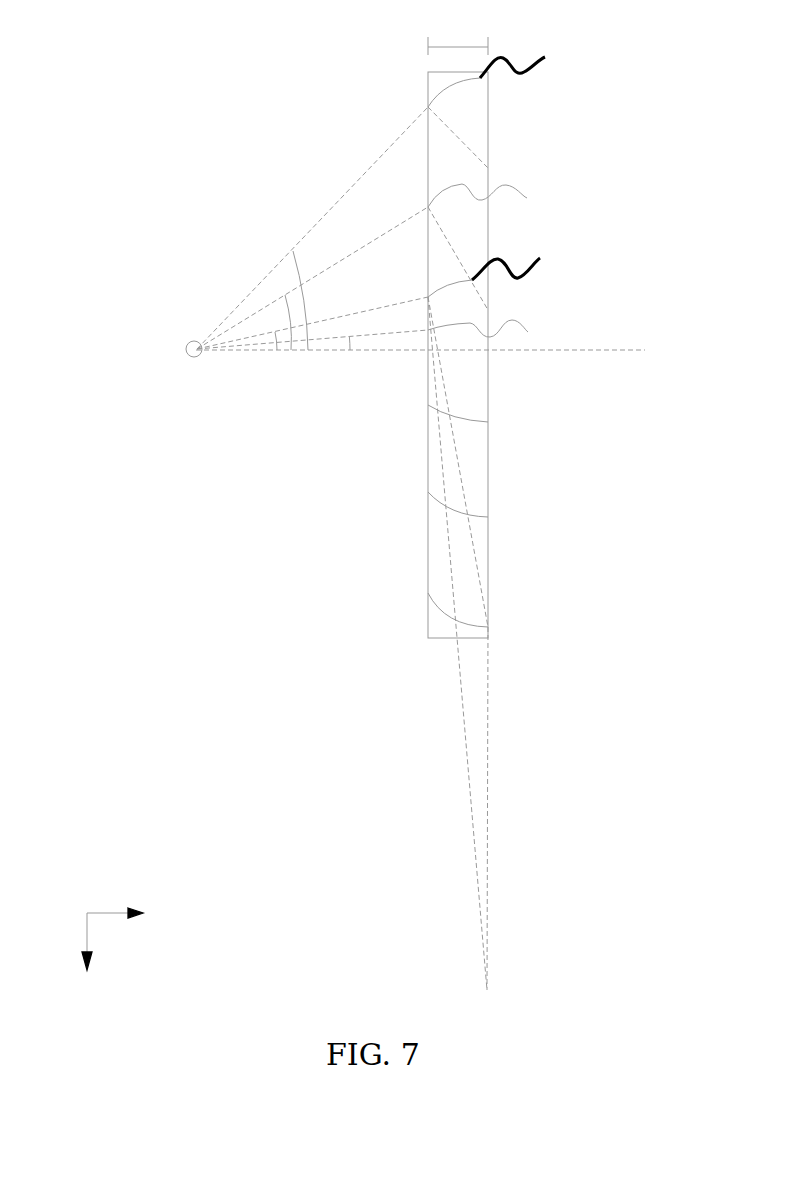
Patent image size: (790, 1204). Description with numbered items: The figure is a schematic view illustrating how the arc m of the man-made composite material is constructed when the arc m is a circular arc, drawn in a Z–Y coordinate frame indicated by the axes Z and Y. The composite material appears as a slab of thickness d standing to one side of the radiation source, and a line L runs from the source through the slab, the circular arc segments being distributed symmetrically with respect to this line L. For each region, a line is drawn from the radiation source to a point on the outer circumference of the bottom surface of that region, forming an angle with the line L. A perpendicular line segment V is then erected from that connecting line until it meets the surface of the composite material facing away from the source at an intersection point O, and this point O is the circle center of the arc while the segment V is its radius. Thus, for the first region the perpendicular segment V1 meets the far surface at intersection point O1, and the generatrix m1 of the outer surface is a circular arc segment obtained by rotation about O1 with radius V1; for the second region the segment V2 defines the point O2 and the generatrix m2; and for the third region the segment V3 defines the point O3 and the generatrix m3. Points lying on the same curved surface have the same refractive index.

The line L is at (433, 350).
The thickness of the man-made composite material d is at (458, 28).
The arc m is at (493, 323).
The generatrix m1 is at (508, 272).
The generatrix m2 is at (500, 199).
The generatrix m3 is at (508, 77).
The perpendicular line segment V is at (457, 643).
The perpendicular line segment V1 is at (458, 462).
The perpendicular line segment V2 is at (458, 258).
The perpendicular line segment V3 is at (458, 137).
The intersection point O is at (499, 814).
The intersection point O1 is at (505, 634).
The intersection point O2 is at (505, 312).
The intersection point O3 is at (505, 159).
The Z axis Z is at (128, 914).
The Y axis Y is at (86, 958).